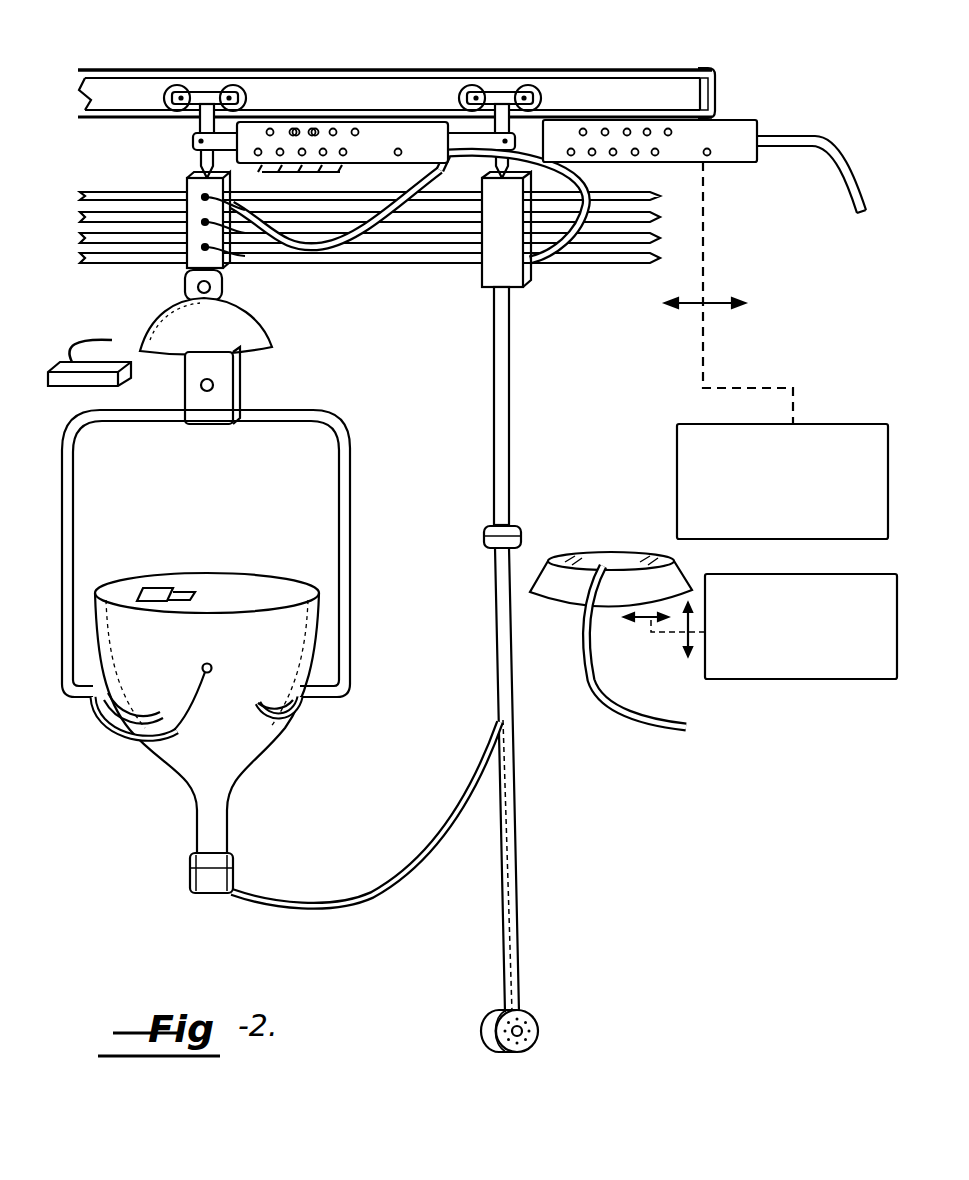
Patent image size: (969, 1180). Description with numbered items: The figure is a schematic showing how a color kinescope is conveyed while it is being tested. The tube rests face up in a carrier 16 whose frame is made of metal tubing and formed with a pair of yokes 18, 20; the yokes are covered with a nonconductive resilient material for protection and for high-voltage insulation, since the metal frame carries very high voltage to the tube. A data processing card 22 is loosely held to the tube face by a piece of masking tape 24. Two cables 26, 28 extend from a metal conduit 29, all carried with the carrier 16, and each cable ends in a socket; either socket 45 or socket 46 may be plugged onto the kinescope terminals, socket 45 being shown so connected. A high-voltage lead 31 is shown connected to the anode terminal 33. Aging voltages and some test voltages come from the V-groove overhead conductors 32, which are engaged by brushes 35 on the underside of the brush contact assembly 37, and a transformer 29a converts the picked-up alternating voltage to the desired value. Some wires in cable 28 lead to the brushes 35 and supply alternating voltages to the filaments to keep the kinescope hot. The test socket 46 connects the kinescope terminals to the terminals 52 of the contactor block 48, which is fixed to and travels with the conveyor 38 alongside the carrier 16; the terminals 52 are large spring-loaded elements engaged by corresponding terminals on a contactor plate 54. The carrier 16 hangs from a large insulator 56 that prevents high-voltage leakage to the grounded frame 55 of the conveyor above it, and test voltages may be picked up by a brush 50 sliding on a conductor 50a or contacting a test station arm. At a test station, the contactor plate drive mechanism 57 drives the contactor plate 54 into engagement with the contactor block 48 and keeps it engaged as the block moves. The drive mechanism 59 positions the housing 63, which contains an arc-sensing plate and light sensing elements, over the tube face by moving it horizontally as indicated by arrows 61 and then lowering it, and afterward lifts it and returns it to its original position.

The carrier 16 is at (354, 497).
The yoke 18 is at (283, 716).
The yoke 20 is at (147, 712).
The data processing card 22 is at (157, 590).
The masking tape 24 is at (195, 592).
The cable 26 is at (358, 893).
The cable 28 is at (518, 887).
The metal conduit 29 is at (510, 383).
The transformer 29a is at (482, 288).
The high-voltage lead 31 is at (138, 730).
The V-groove overhead conductors 32 is at (110, 245).
The anode terminal 33 is at (212, 667).
The brushes 35 is at (246, 256).
The brush contact assembly 37 is at (178, 176).
The conveyor 38 is at (148, 92).
The socket 45 is at (205, 895).
The test socket 46 is at (523, 1010).
The contactor block 48 is at (400, 133).
The brush 50 is at (215, 386).
The conductor 50a is at (86, 390).
The terminals 52 is at (313, 128).
The contactor plate 54 is at (748, 133).
The frame of the conveyor 55 is at (668, 72).
The insulator 56 is at (230, 314).
The contactor plate drive mechanism 57 is at (838, 425).
The drive mechanism 59 is at (810, 680).
The arrows 61 is at (648, 618).
The housing 63 is at (577, 553).